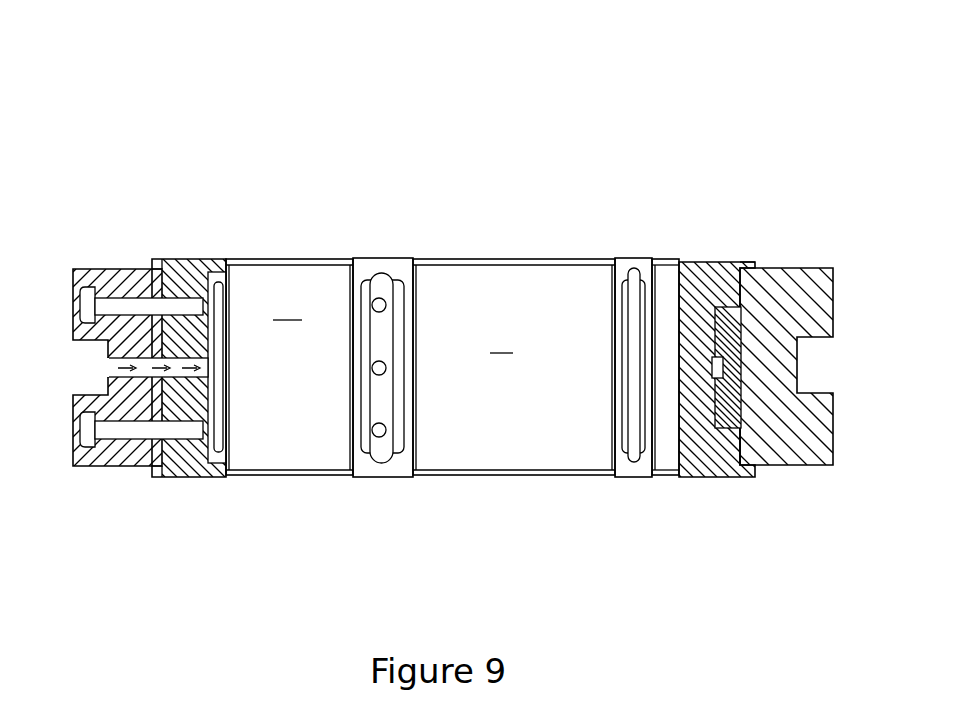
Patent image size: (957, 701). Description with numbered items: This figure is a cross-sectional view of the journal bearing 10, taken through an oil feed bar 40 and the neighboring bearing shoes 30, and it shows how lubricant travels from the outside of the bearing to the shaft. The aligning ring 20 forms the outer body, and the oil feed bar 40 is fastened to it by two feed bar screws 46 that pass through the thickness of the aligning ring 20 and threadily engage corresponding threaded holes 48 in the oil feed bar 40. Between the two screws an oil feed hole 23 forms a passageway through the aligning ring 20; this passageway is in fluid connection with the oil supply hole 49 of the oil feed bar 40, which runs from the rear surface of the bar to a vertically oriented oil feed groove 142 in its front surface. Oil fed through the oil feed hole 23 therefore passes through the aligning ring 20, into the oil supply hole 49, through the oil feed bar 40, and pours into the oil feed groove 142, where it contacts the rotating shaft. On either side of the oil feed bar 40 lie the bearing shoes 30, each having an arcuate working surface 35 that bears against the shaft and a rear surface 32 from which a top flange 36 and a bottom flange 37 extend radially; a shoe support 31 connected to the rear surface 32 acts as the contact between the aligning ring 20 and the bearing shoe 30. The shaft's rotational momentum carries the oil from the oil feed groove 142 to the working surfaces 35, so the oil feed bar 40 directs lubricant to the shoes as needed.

The journal bearing 10 is at (661, 86).
The aligning ring 20 is at (107, 268).
The oil feed hole 23 is at (107, 368).
The bearing shoe 30 is at (285, 260).
The shoe support 31 is at (745, 432).
The rear surface 32 is at (716, 428).
The arcuate working surface 35 is at (393, 327).
The top flange 36 is at (755, 258).
The bottom flange 37 is at (752, 473).
The oil feed bar 40 is at (193, 258).
The feed bar screw 46 is at (80, 303).
The threaded hole 48 is at (380, 273).
The oil supply hole 49 is at (387, 367).
The oil feed groove 142 is at (224, 322).